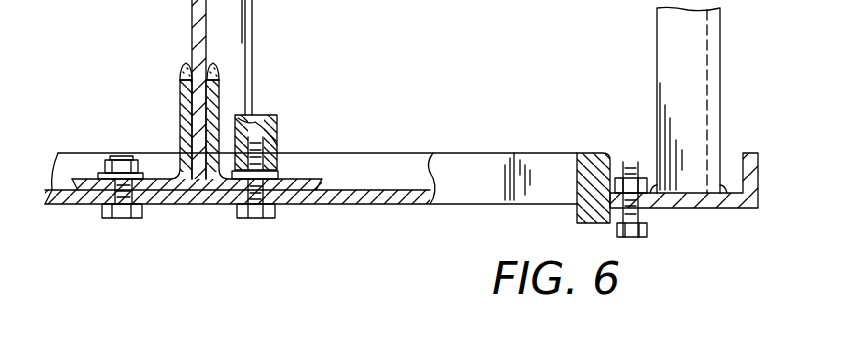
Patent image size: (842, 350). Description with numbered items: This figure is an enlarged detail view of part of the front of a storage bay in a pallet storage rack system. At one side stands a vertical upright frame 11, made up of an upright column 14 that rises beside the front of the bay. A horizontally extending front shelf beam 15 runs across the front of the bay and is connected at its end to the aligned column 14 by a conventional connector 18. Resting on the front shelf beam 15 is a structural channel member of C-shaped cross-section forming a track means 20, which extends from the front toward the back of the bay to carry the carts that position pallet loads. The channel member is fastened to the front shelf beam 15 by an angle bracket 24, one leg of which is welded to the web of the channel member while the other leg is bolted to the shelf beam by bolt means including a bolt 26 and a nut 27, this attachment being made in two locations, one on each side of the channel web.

The upright frame 11 is at (724, 66).
The upright column 14 is at (732, 208).
The front shelf beam 15 is at (460, 200).
The connector 18 is at (577, 210).
The track means 20 is at (192, 30).
The angle bracket 24 is at (187, 108).
The bolt 26 is at (122, 206).
The nut 27 is at (110, 176).